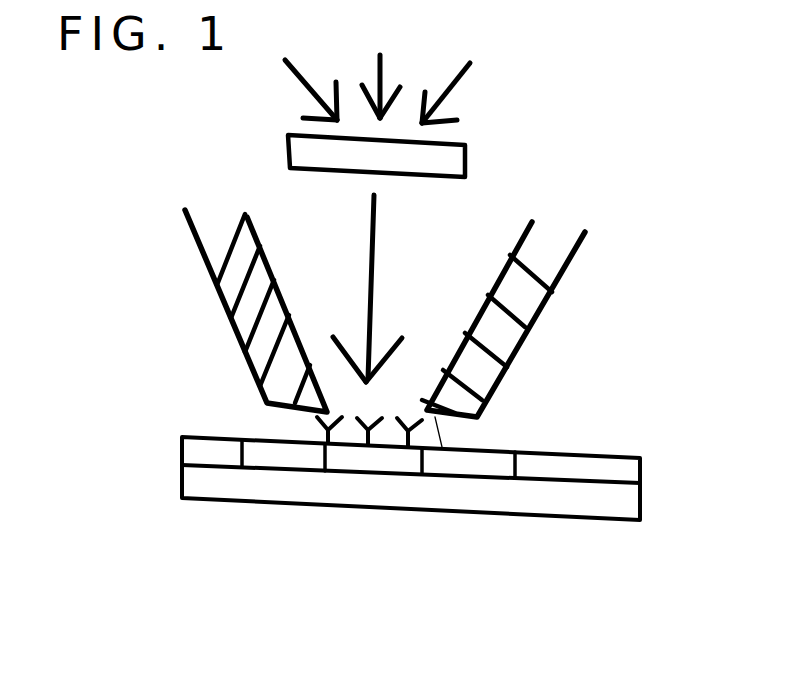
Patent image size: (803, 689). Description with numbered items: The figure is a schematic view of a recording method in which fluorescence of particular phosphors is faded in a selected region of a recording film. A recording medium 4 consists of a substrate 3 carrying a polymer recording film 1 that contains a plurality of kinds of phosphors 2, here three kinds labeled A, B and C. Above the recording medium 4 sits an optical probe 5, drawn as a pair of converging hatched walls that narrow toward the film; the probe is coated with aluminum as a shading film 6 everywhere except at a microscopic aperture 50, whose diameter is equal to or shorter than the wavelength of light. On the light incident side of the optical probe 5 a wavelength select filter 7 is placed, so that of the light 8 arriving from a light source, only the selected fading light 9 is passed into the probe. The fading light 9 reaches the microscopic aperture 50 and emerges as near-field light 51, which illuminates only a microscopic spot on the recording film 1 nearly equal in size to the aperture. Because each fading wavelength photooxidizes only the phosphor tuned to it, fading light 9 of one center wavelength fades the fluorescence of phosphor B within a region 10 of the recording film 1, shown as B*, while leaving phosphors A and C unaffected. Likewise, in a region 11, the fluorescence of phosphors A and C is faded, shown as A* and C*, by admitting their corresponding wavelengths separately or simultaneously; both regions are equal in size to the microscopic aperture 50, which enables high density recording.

The recording film 1 is at (573, 457).
The phosphors 2 is at (300, 468).
The substrate 3 is at (568, 507).
The recording medium 4 is at (420, 491).
The optical probe 5 is at (211, 311).
The shading film 6 is at (252, 362).
The wavelength select filter 7 is at (452, 165).
The light 8 is at (338, 123).
The fading light 9 is at (370, 298).
The region 10 is at (355, 463).
The region 11 is at (485, 480).
The microscopic aperture 50 is at (400, 410).
The near-field light 51 is at (318, 433).